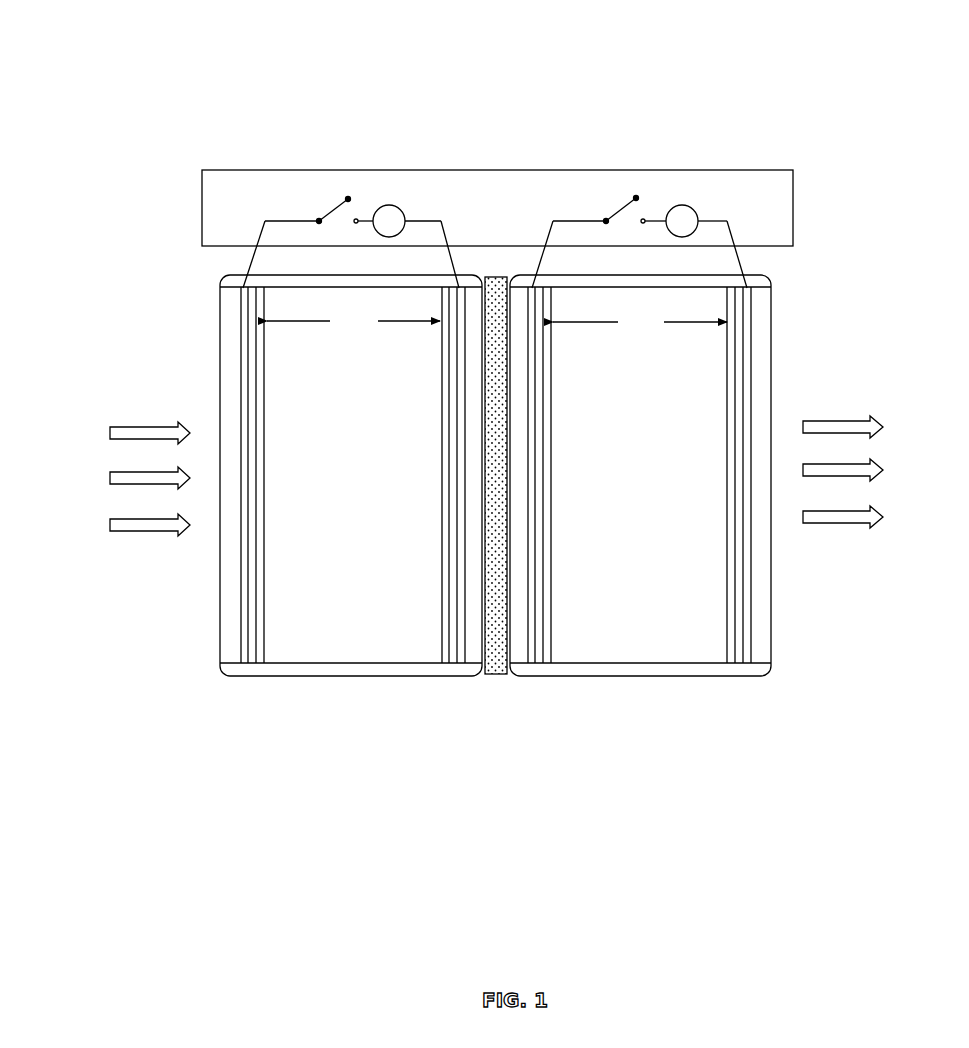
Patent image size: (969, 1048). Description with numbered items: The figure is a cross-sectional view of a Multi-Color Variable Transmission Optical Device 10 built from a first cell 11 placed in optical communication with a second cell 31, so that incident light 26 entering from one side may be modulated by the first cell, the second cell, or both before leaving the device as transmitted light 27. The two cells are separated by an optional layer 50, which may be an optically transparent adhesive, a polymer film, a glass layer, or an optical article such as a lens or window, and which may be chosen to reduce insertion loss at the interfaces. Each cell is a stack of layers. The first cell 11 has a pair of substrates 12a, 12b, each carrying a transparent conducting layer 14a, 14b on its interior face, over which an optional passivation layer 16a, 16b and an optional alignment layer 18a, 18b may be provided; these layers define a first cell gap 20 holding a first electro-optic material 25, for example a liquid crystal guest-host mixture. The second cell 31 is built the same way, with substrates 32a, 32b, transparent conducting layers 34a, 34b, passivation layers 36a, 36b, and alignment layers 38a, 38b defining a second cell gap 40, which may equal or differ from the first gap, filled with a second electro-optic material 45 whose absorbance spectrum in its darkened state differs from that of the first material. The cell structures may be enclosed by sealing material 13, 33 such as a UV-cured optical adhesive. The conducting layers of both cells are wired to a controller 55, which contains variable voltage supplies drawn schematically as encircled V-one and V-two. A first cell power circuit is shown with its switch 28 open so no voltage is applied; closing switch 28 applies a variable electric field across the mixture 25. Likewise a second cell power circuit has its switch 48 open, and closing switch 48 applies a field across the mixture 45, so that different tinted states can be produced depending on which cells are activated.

The Multi-Color Variable Transmission Optical Device 10 is at (380, 102).
The first cell 11 is at (318, 587).
The second cell 31 is at (673, 587).
The substrate 12a is at (231, 657).
The transparent conducting layer 14a is at (244, 657).
The passivation layer 16a is at (251, 657).
The alignment layer 18a is at (259, 657).
The substrate 12b is at (473, 657).
The transparent conducting layer 14b is at (460, 657).
The passivation layer 16b is at (452, 657).
The alignment layer 18b is at (445, 657).
The sealing material 13 is at (319, 279).
The sealing material 33 is at (606, 279).
The first cell gap 20 is at (353, 322).
The second cell gap 40 is at (640, 323).
The first electro-optic material 25 is at (226, 620).
The second electro-optic material 45 is at (690, 627).
The incident light 26 is at (120, 427).
The transmitted light 27 is at (818, 420).
The switch 28 is at (318, 217).
The switch 48 is at (606, 217).
The substrate 32a is at (522, 657).
The transparent conducting layer 34a is at (532, 657).
The passivation layer 36a is at (539, 657).
The alignment layer 38a is at (548, 657).
The substrate 32b is at (759, 657).
The transparent conducting layer 34b is at (748, 657).
The passivation layer 36b is at (738, 657).
The alignment layer 38b is at (732, 657).
The layer 50 is at (496, 676).
The controller 55 is at (793, 214).